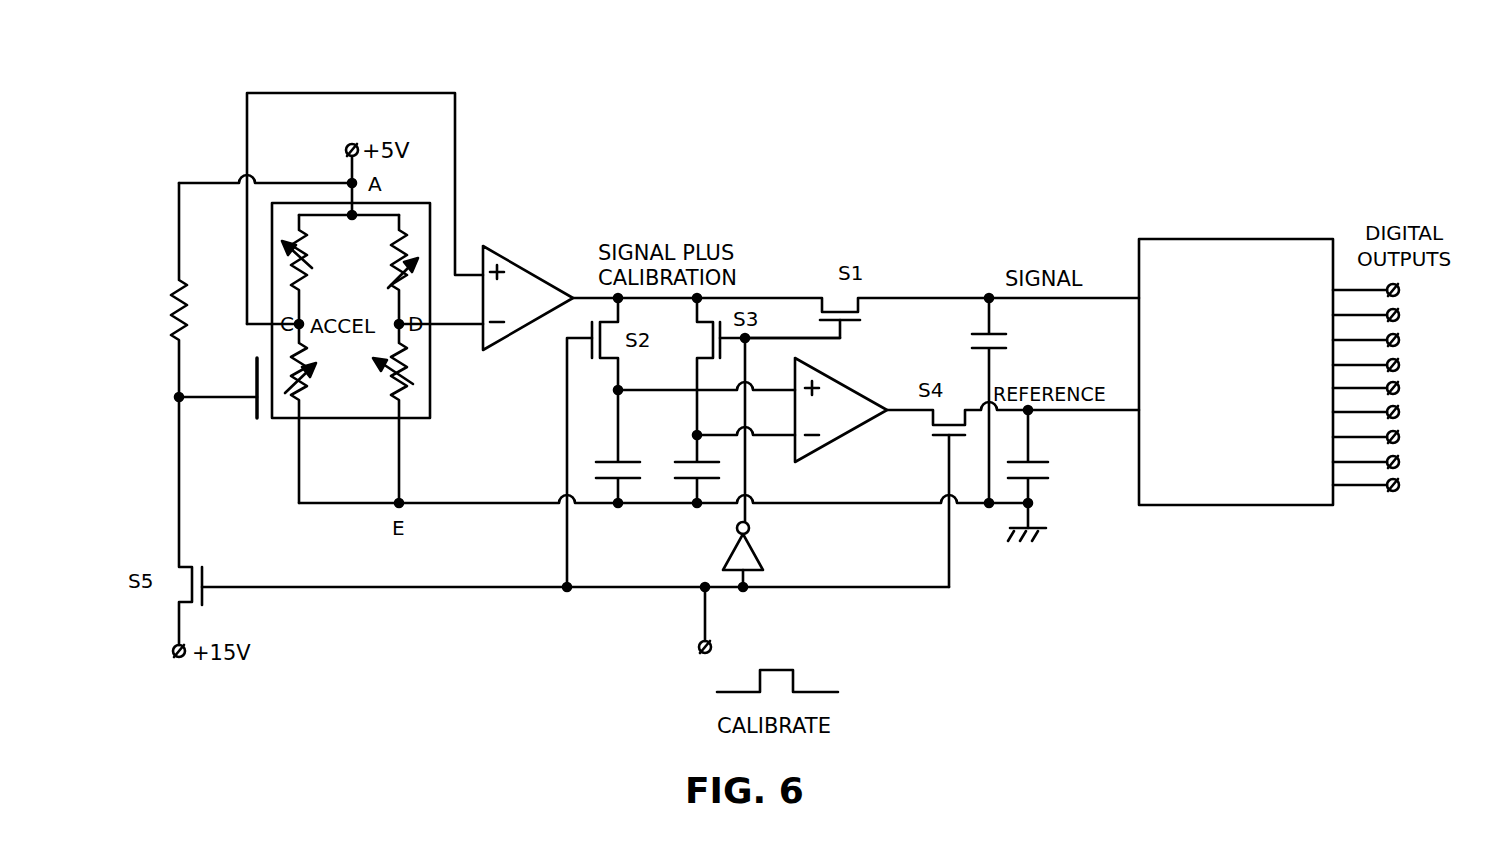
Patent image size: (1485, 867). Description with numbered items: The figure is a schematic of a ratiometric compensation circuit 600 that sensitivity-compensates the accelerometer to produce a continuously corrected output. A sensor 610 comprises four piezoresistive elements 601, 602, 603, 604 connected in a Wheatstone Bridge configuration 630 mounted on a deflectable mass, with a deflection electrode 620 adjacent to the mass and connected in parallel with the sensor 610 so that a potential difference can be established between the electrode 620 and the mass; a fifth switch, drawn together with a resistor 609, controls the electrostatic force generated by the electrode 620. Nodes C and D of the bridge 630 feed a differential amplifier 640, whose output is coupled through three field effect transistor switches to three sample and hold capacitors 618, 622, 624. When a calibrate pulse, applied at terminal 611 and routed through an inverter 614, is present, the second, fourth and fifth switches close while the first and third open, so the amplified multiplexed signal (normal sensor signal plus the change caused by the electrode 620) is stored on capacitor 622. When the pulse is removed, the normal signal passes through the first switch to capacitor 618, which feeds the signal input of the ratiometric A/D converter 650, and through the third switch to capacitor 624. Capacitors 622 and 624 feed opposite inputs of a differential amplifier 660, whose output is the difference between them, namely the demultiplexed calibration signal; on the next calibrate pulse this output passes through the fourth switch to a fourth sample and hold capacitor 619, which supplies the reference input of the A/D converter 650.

The circuit 600 is at (960, 222).
The piezoresistive element 601 is at (373, 366).
The piezoresistive element 602 is at (306, 246).
The piezoresistive element 603 is at (396, 268).
The piezoresistive element 604 is at (321, 413).
The 100K ohm resistor 609 is at (178, 296).
The sensor 610 is at (474, 172).
The calibrate input terminal 611 is at (700, 646).
The inverter 614 is at (757, 541).
The sample and hold device 618 is at (1000, 334).
The sample and hold device 619 is at (1050, 460).
The deflection electrode 620 is at (257, 405).
The sample and hold device 622 is at (627, 462).
The sample and hold device 624 is at (677, 462).
The Wheatstone Bridge configuration 630 is at (432, 418).
The differential amplifier 640 is at (524, 266).
The ratiometric A/D converter 650 is at (1236, 239).
The differential amplifier 660 is at (832, 372).